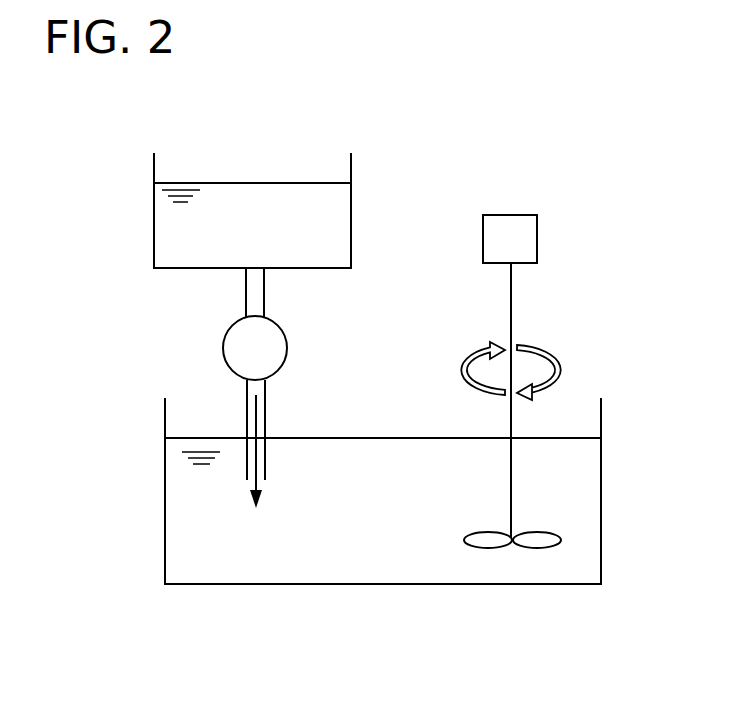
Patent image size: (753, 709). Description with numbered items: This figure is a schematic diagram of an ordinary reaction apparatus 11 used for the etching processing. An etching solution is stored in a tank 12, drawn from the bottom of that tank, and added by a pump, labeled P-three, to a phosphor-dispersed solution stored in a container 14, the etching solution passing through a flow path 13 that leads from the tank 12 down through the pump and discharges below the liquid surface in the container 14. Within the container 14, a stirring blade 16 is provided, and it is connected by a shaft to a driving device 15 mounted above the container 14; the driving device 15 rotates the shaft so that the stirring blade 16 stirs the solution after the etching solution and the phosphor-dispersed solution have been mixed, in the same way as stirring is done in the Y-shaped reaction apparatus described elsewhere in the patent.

The reaction apparatus 11 is at (164, 330).
The tank 12 is at (351, 220).
The flow path 13 is at (265, 396).
The container 14 is at (601, 490).
The driving device 15 is at (537, 236).
The stirring blade 16 is at (562, 540).